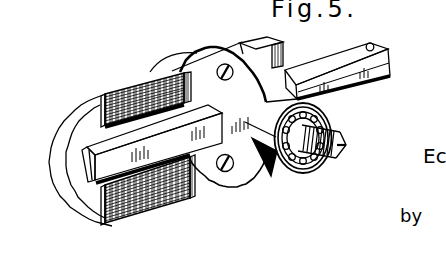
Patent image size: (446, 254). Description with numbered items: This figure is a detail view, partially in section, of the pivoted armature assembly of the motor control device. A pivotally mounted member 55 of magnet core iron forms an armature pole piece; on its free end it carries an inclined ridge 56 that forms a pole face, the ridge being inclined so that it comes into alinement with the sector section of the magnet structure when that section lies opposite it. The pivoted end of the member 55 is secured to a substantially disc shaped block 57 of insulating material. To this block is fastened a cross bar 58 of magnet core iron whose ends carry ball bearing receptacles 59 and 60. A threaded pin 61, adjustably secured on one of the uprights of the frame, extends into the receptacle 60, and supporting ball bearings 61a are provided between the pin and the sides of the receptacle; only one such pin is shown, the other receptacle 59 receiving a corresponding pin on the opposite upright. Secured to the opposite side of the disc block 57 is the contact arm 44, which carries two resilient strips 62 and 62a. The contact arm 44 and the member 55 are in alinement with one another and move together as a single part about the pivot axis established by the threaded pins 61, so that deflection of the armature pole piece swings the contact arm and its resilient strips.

The contact arm 44 is at (113, 94).
The pivotally mounted member 55 is at (100, 152).
The inclined ridge 56 is at (83, 168).
The disc shaped block 57 is at (241, 46).
The cross bar 58 is at (204, 87).
The ball bearing receptacle 59 is at (165, 64).
The ball bearing receptacle 60 is at (328, 115).
The threaded pin 61 is at (346, 145).
The supporting ball bearing 61a is at (294, 168).
The resilient strip 62 is at (323, 66).
The resilient strip 62a is at (372, 75).